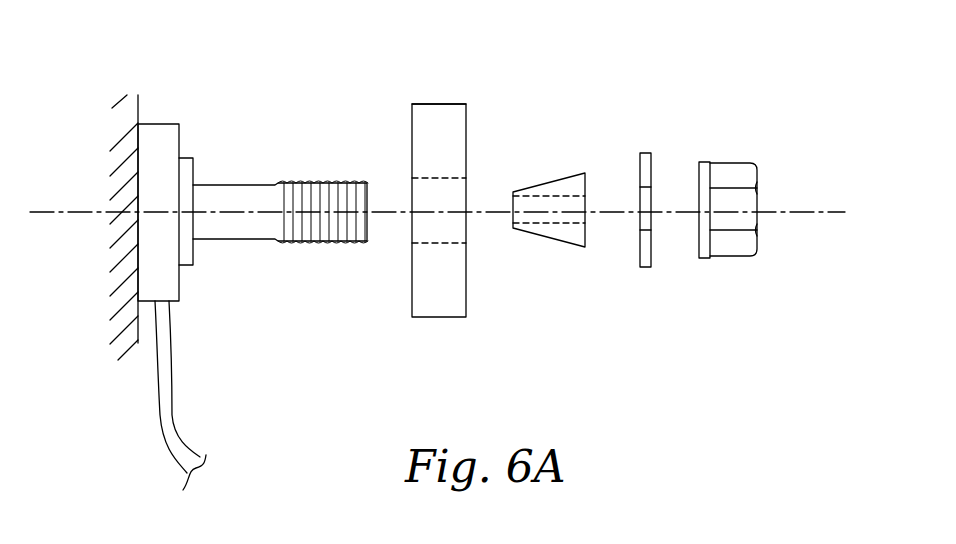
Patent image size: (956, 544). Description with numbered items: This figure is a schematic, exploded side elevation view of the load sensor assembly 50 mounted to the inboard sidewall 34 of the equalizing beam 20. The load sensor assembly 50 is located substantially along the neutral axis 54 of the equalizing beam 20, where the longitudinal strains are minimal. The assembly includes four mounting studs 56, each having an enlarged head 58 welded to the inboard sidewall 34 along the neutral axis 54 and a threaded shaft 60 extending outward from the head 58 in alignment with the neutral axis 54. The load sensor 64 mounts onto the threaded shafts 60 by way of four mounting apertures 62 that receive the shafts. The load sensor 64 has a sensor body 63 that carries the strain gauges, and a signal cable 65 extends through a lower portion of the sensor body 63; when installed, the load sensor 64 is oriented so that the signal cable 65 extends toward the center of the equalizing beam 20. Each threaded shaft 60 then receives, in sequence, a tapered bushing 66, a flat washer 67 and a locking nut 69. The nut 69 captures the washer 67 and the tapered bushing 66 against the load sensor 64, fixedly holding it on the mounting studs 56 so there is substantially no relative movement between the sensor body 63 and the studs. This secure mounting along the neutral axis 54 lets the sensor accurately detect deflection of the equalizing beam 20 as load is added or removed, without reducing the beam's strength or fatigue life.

The equalizing beam 20 is at (122, 325).
The inboard sidewall 34 is at (146, 123).
The load sensor assembly 50 is at (677, 65).
The neutral axis 54 is at (796, 212).
The mounting stud 56 is at (186, 152).
The enlarged head 58 is at (170, 124).
The threaded shaft 60 is at (233, 185).
The mounting aperture 62 is at (452, 245).
The sensor body 63 is at (468, 128).
The load sensor 64 is at (437, 117).
The signal cable 65 is at (170, 385).
The tapered bushing 66 is at (544, 185).
The flat washer 67 is at (652, 255).
The locking nut 69 is at (736, 172).